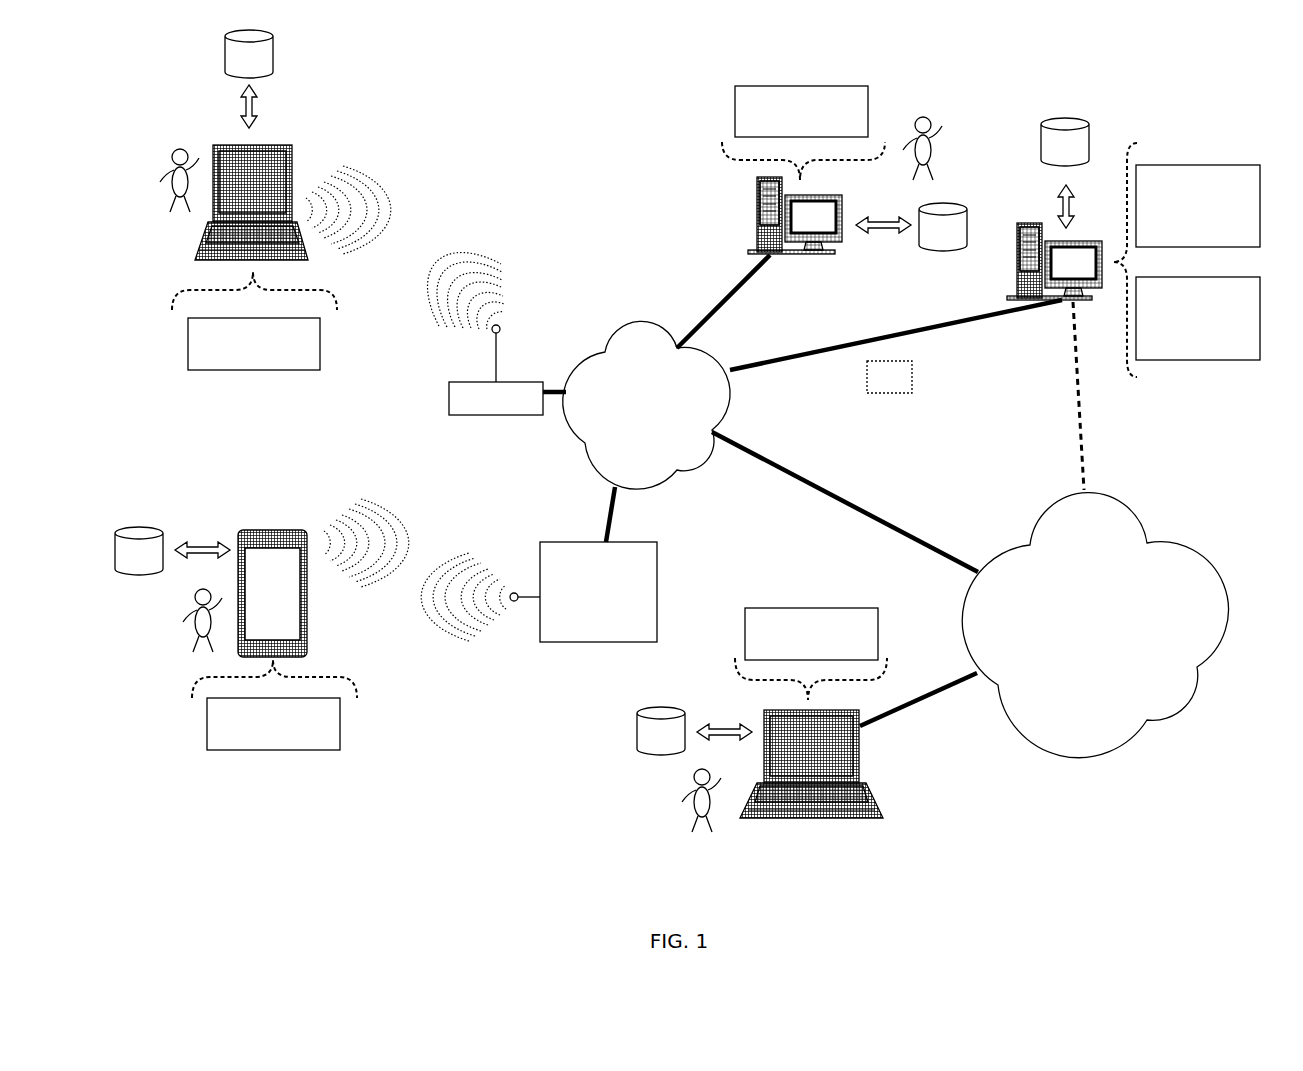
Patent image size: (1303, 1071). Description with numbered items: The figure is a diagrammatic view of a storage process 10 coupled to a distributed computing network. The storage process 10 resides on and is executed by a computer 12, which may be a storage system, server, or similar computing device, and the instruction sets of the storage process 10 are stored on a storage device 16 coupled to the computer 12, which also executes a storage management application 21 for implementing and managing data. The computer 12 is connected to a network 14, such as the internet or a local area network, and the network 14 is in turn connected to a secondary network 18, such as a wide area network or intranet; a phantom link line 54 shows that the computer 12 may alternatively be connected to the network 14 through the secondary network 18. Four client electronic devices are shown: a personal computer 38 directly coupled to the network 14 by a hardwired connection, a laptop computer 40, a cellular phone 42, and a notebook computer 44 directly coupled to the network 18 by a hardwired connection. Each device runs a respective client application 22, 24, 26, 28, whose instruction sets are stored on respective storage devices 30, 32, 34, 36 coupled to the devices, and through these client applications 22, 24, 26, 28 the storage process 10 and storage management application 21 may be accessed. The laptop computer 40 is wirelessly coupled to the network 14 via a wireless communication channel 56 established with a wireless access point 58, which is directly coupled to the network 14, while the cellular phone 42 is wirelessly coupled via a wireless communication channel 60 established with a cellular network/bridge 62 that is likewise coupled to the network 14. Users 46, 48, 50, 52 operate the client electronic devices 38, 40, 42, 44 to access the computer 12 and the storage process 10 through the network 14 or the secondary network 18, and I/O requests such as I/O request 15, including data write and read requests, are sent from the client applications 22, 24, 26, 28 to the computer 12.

The storage process 10 is at (1260, 200).
The computer 12 is at (1020, 240).
The network 14 is at (646, 405).
The I/O request 15 is at (866, 374).
The storage device 16 is at (1065, 142).
The secondary network 18 is at (1095, 625).
The storage management application 21 is at (1260, 310).
The client application 22 is at (868, 113).
The client application 24 is at (320, 352).
The client application 26 is at (340, 718).
The client application 28 is at (878, 632).
The storage device 30 is at (943, 227).
The storage device 32 is at (249, 54).
The storage device 34 is at (139, 551).
The storage device 36 is at (661, 731).
The client electronic device 38 is at (745, 203).
The client electronic device 40 is at (292, 170).
The client electronic device 42 is at (312, 580).
The client electronic device 44 is at (862, 758).
The user 46 is at (945, 133).
The user 48 is at (145, 173).
The user 50 is at (180, 607).
The user 52 is at (668, 797).
The phantom link line 54 is at (1050, 367).
The wireless communication channel 56 is at (437, 221).
The wireless access point (WAP) 58 is at (445, 400).
The wireless communication channel 60 is at (425, 544).
The cellular network/bridge 62 is at (657, 560).